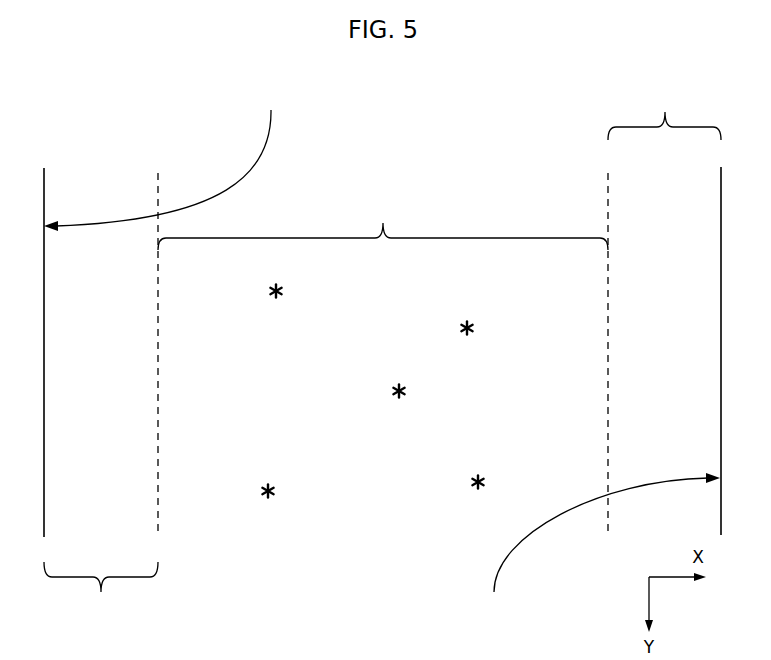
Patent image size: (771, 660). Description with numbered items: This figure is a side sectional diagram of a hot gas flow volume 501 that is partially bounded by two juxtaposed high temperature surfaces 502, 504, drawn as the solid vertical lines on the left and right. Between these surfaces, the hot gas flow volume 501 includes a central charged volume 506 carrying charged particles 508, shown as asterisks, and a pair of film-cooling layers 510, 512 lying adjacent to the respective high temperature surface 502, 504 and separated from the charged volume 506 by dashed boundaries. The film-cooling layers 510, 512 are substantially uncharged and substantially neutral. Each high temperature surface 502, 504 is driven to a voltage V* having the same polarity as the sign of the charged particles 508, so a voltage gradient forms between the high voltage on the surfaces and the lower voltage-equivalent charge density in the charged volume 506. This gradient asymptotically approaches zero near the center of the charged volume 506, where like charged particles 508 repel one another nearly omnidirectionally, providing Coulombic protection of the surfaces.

The hot gas flow volume 501 is at (110, 86).
The high temperature surface 502 is at (166, 150).
The high temperature surface 504 is at (600, 552).
The charged volume 506 is at (383, 214).
The charged particles 508 is at (406, 389).
The film-cooling layer 510 is at (101, 594).
The film-cooling layer 512 is at (664, 104).